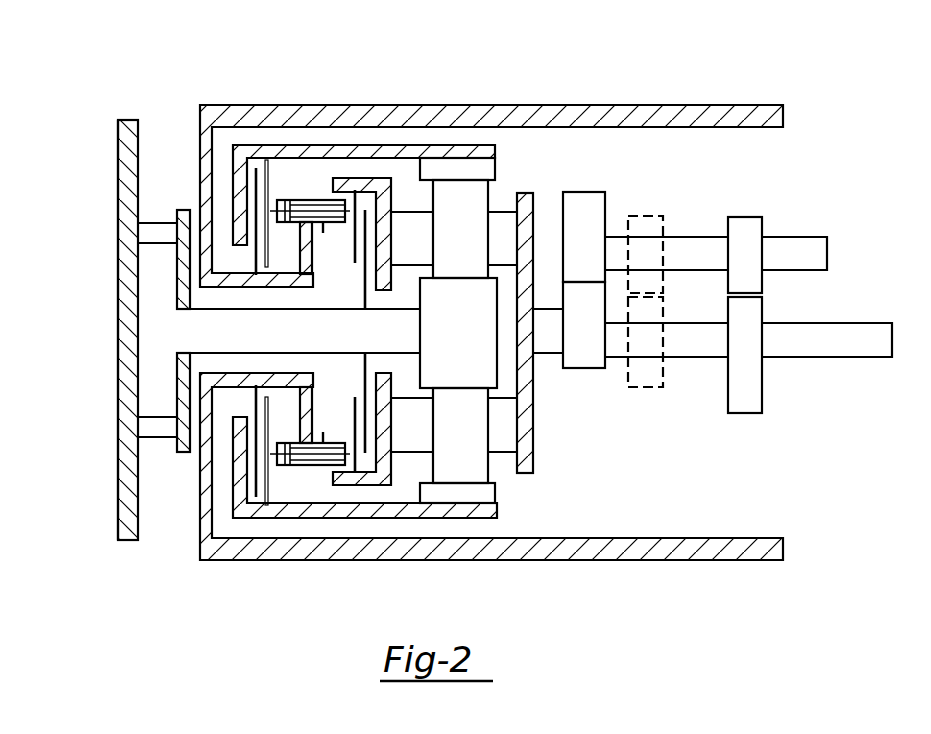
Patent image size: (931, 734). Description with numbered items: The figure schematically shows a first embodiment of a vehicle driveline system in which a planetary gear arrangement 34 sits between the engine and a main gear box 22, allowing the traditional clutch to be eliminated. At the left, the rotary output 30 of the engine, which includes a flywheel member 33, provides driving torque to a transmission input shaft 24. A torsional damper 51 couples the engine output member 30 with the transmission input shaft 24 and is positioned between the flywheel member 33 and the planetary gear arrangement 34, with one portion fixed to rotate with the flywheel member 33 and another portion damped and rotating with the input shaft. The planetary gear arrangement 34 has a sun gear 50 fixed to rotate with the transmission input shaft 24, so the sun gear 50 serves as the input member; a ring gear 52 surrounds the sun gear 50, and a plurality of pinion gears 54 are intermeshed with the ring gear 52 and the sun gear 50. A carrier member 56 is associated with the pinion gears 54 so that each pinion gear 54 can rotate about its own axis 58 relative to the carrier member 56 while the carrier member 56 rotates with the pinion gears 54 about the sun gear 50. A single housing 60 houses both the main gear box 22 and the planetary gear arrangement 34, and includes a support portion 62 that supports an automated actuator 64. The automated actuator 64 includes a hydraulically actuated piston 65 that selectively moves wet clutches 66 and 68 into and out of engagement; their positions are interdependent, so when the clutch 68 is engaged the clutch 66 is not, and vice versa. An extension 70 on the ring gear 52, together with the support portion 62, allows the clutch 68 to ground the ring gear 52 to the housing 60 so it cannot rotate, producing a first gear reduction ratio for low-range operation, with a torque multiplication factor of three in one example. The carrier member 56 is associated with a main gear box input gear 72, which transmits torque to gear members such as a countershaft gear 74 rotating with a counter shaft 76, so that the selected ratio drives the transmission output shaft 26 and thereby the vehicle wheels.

The main gear box 22 is at (688, 203).
The transmission input shaft 24 is at (328, 345).
The transmission output shaft 26 is at (805, 348).
The rotary output of engine 30 is at (112, 282).
The flywheel member 33 is at (113, 476).
The planetary gear arrangement 34 is at (506, 190).
The sun gear 50 is at (468, 351).
The torsional damper 51 is at (178, 397).
The ring gear 52 is at (482, 492).
The pinion gears 54 is at (473, 251).
The carrier member 56 is at (393, 283).
The pinion gear axis 58 is at (430, 253).
The housing 60 is at (600, 105).
The support portion 62 is at (278, 287).
The automated actuator 64 is at (309, 190).
The hydraulically actuated piston 65 is at (323, 232).
The wet clutch 66 is at (347, 250).
The wet clutch 68 is at (278, 200).
The extension 70 is at (233, 200).
The main gear box input gear 72 is at (593, 336).
The countershaft gear 74 is at (593, 256).
The counter shaft 76 is at (783, 245).